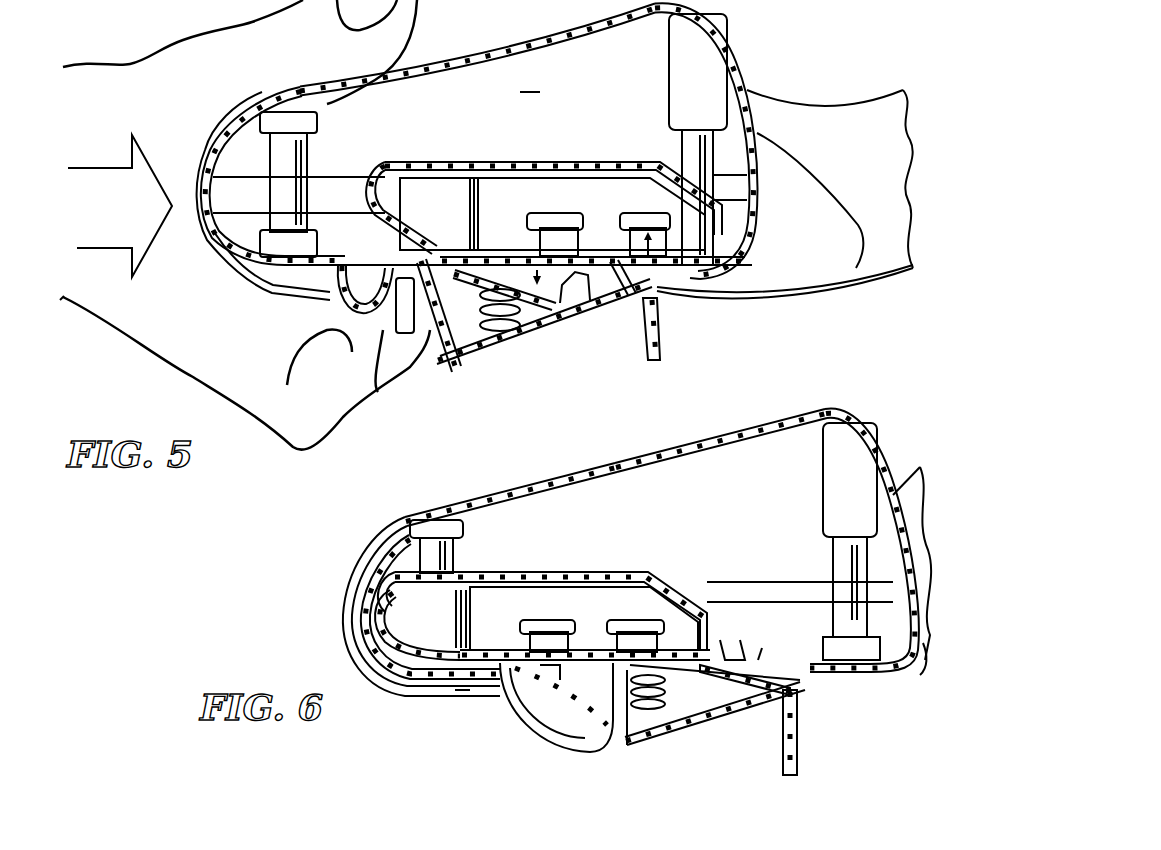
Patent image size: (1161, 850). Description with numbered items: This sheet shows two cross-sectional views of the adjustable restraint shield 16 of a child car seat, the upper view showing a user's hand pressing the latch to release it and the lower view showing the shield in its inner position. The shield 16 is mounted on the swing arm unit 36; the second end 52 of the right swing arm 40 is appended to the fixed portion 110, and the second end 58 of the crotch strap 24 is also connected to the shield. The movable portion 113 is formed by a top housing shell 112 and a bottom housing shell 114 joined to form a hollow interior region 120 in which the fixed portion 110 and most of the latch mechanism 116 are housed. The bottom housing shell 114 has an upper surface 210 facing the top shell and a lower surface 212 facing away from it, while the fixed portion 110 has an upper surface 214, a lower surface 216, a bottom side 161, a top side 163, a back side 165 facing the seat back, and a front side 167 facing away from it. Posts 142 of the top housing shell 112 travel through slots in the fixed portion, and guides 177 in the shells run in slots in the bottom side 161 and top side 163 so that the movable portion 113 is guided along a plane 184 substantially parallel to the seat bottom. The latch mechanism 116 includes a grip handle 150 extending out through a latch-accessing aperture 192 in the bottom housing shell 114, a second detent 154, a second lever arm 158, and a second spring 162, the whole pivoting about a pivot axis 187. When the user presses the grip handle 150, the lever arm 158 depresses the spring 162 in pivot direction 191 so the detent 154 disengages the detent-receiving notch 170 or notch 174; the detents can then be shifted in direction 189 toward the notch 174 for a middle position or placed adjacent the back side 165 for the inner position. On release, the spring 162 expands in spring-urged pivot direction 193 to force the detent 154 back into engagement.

In FIG. 5, the adjustable restraint shield 16 is at (492, 168).
In FIG. 6, the adjustable restraint shield 16 is at (600, 569).
In FIG. 5, the crotch strap 24 is at (660, 342).
In FIG. 6, the crotch strap 24 is at (799, 748).
In FIG. 5, the swing arm unit 36 is at (785, 206).
In FIG. 6, the swing arm unit 36 is at (875, 565).
In FIG. 5, the right swing arm 40 is at (858, 128).
In FIG. 6, the right swing arm 40 is at (907, 495).
In FIG. 5, the second end of right swing arm 52 is at (762, 165).
In FIG. 6, the second end of right swing arm 52 is at (912, 662).
In FIG. 5, the second end of crotch strap 58 is at (660, 285).
In FIG. 6, the second end of crotch strap 58 is at (755, 665).
In FIG. 5, the fixed portion 110 is at (548, 229).
In FIG. 6, the fixed portion 110 is at (495, 632).
In FIG. 5, the top housing shell 112 is at (517, 35).
In FIG. 6, the top housing shell 112 is at (530, 482).
In FIG. 5, the movable portion 113 is at (212, 243).
In FIG. 6, the movable portion 113 is at (652, 452).
In FIG. 5, the bottom housing shell 114 is at (710, 287).
In FIG. 6, the bottom housing shell 114 is at (878, 682).
In FIG. 5, the latch mechanism 116 is at (528, 353).
In FIG. 6, the latch mechanism 116 is at (659, 708).
In FIG. 5, the hollow interior region 120 is at (528, 94).
In FIG. 6, the hollow interior region 120 is at (400, 560).
In FIG. 5, the posts 142 is at (294, 158).
In FIG. 6, the posts 142 is at (832, 490).
In FIG. 5, the grip handle 150 is at (432, 330).
In FIG. 6, the grip handle 150 is at (560, 685).
In FIG. 5, the second detent 154 is at (600, 232).
In FIG. 6, the second detent 154 is at (727, 645).
In FIG. 5, the second lever arm 158 is at (548, 325).
In FIG. 6, the second lever arm 158 is at (698, 700).
In FIG. 5, the bottom side of fixed portion 161 is at (460, 170).
In FIG. 6, the bottom side of fixed portion 161 is at (445, 690).
In FIG. 5, the second spring 162 is at (490, 330).
In FIG. 6, the second spring 162 is at (652, 722).
In FIG. 5, the top side of fixed portion 163 is at (552, 162).
In FIG. 6, the top side of fixed portion 163 is at (560, 572).
In FIG. 5, the back side of fixed portion 165 is at (752, 247).
In FIG. 6, the back side of fixed portion 165 is at (725, 612).
In FIG. 5, the front side of fixed portion 167 is at (372, 178).
In FIG. 6, the front side of fixed portion 167 is at (347, 605).
In FIG. 5, the detent-receiving notch 170 is at (553, 213).
In FIG. 6, the detent-receiving notch 170 is at (520, 635).
In FIG. 5, the detent-receiving notch 174 is at (633, 230).
In FIG. 6, the detent-receiving notch 174 is at (610, 640).
In FIG. 5, the guides 177 is at (630, 110).
In FIG. 6, the guides 177 is at (714, 493).
In FIG. 5, the plane 184 is at (110, 243).
In FIG. 5, the pivot axis 187 is at (397, 305).
In FIG. 6, the pivot axis 187 is at (548, 673).
In FIG. 5, the direction 189 is at (628, 333).
In FIG. 5, the pivot direction 191 is at (537, 270).
In FIG. 5, the latch-accessing aperture 192 is at (450, 368).
In FIG. 6, the spring-urged pivot direction 193 is at (757, 665).
In FIG. 5, the upper surface of bottom housing shell 210 is at (737, 268).
In FIG. 6, the upper surface of bottom housing shell 210 is at (830, 612).
In FIG. 5, the lower surface of bottom housing shell 212 is at (268, 268).
In FIG. 6, the lower surface of bottom housing shell 212 is at (460, 700).
In FIG. 5, the upper surface of fixed portion 214 is at (528, 162).
In FIG. 6, the upper surface of fixed portion 214 is at (525, 572).
In FIG. 5, the lower surface of fixed portion 216 is at (430, 248).
In FIG. 6, the lower surface of fixed portion 216 is at (400, 683).